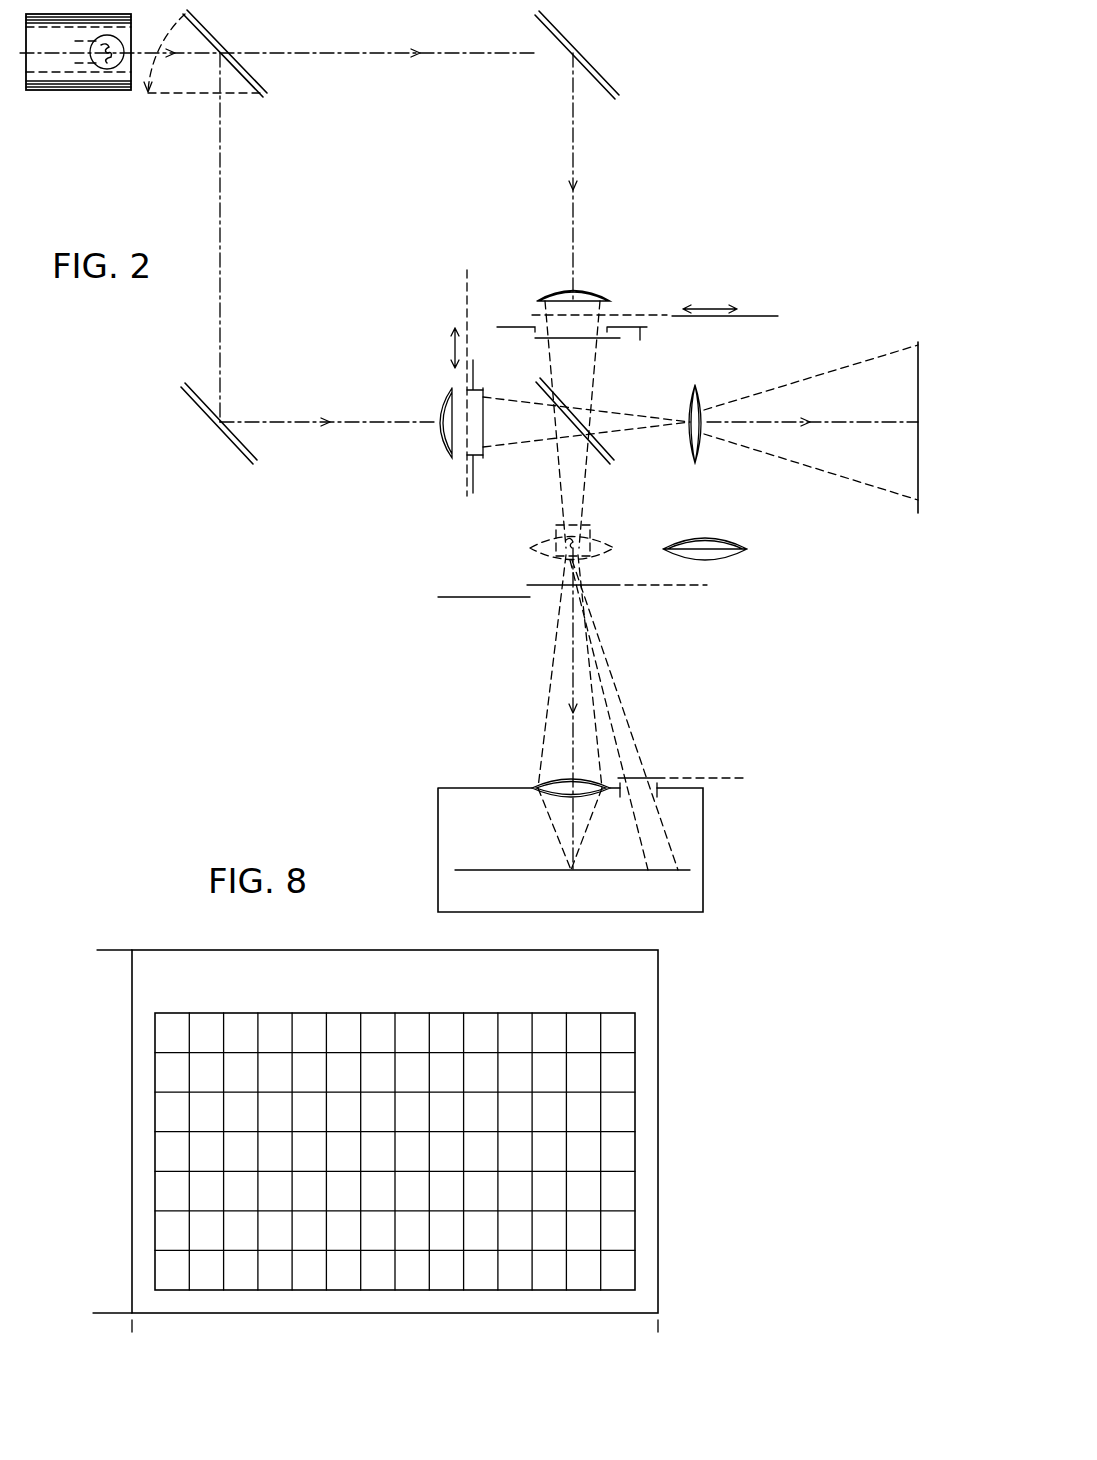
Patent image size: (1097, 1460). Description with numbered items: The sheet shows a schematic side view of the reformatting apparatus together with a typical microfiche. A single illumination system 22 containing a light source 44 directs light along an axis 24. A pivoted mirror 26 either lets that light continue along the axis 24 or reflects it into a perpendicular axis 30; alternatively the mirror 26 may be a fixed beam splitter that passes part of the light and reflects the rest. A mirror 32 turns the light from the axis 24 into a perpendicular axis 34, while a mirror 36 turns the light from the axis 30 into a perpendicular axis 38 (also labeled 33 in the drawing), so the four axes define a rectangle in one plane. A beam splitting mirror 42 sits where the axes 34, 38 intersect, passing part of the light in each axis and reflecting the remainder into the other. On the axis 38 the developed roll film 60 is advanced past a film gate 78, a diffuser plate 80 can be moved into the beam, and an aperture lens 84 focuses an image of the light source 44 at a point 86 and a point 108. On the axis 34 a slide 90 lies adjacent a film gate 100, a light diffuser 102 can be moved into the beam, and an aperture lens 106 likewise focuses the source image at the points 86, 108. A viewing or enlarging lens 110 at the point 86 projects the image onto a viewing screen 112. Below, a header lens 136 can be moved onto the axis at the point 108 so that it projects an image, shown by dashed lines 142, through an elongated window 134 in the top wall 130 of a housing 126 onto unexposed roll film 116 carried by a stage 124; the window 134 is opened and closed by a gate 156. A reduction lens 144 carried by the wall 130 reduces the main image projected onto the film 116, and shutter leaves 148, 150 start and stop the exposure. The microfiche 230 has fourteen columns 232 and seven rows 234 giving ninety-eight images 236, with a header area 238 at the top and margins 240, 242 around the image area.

In FIG. 2, the illumination system 22 is at (77, 88).
In FIG. 2, the light source 44 is at (113, 62).
In FIG. 2, the mirror 26 is at (225, 26).
In FIG. 2, the axis 24 is at (375, 52).
In FIG. 2, the mirror 32 is at (563, 36).
In FIG. 2, the axis 34 is at (573, 160).
In FIG. 2, the axis 30 is at (222, 218).
In FIG. 2, the mirror 36 is at (188, 398).
In FIG. 2, the light beam 33 is at (378, 420).
In FIG. 2, the aperture lens 84 is at (444, 455).
In FIG. 2, the diffuser plate 80 is at (465, 480).
In FIG. 2, the film gate 78 is at (474, 470).
In FIG. 2, the developed roll film 60 is at (484, 397).
In FIG. 2, the aperture lens 106 is at (590, 288).
In FIG. 2, the light diffuser 102 is at (645, 314).
In FIG. 2, the film gate 100 is at (578, 345).
In FIG. 2, the slide 90 is at (588, 340).
In FIG. 2, the beam splitting mirror 42 is at (602, 450).
In FIG. 2, the viewing or enlarging lens 110 is at (690, 385).
In FIG. 2, the point 86 is at (706, 404).
In FIG. 2, the axis 38 is at (850, 420).
In FIG. 2, the viewing screen 112 is at (918, 455).
In FIG. 2, the point 108 is at (588, 540).
In FIG. 2, the header lens 136 is at (710, 540).
In FIG. 2, the shutter leaf 148 is at (603, 584).
In FIG. 2, the shutter leaf 150 is at (480, 598).
In FIG. 2, the dashed lines 142 is at (625, 716).
In FIG. 2, the gate 156 is at (660, 778).
In FIG. 2, the top wall 130 is at (470, 788).
In FIG. 2, the reduction lens 144 is at (536, 796).
In FIG. 2, the elongated window 134 is at (648, 795).
In FIG. 2, the housing 126 is at (438, 832).
In FIG. 2, the unexposed and undeveloped roll film 116 is at (483, 871).
In FIG. 2, the stage 124 is at (675, 912).
In FIG. 8, the microfiche 230 is at (637, 985).
In FIG. 8, the header area 238 is at (560, 975).
In FIG. 8, the margin 240 is at (155, 1287).
In FIG. 8, the columns 232 is at (172, 1013).
In FIG. 8, the rows 234 is at (150, 1268).
In FIG. 8, the images 236 is at (310, 1052).
In FIG. 8, the margin 242 is at (140, 1062).